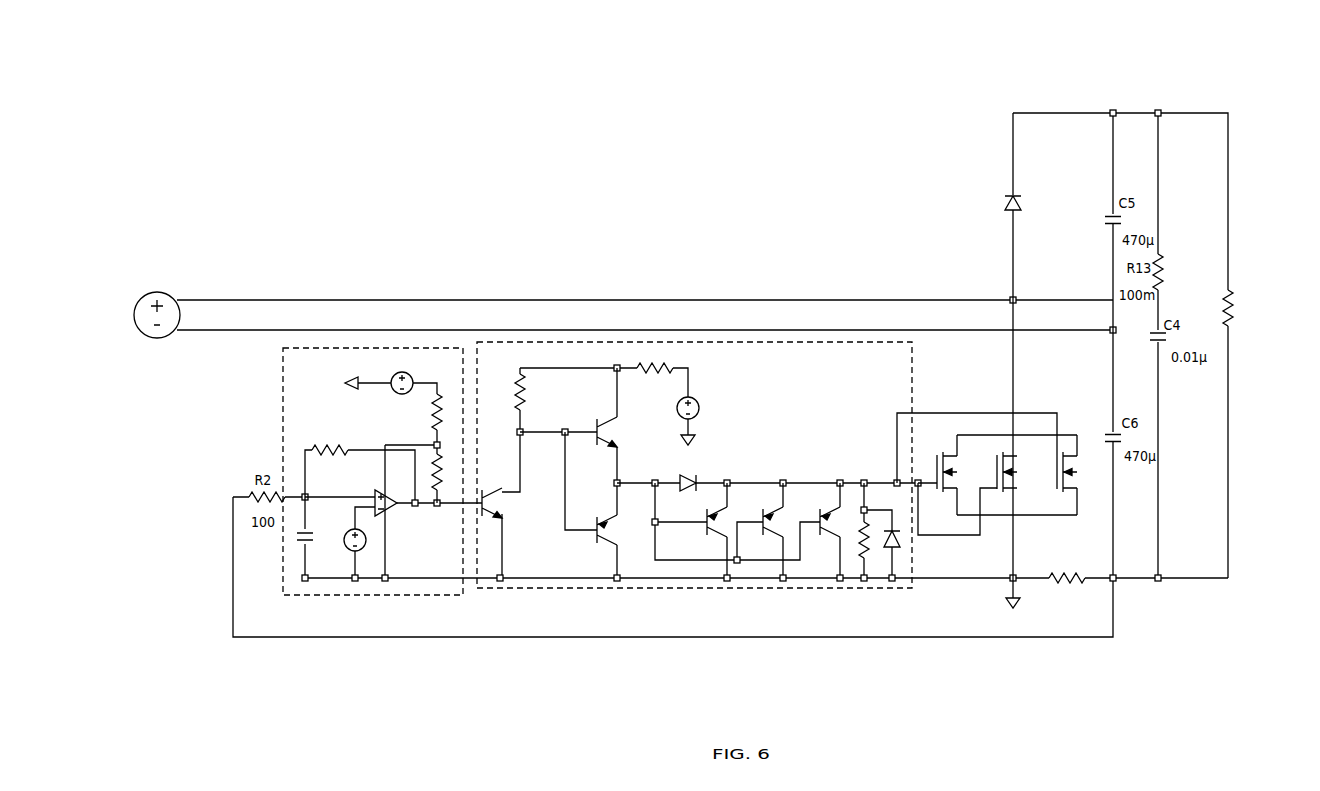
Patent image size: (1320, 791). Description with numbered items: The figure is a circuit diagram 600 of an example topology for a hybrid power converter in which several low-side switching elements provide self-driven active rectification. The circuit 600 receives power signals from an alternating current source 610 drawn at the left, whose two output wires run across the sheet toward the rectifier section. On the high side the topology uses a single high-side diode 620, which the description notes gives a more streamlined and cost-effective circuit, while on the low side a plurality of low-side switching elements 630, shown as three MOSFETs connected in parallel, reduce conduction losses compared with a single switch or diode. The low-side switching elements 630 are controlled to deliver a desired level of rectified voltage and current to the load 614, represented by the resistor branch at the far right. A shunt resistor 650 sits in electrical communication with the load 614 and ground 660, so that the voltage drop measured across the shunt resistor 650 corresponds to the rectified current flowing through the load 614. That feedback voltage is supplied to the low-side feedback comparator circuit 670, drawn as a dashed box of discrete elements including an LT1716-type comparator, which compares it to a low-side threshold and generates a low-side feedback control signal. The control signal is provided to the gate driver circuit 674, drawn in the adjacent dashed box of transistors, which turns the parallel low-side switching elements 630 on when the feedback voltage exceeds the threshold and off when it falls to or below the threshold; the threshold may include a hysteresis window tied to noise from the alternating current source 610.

The circuit diagram 600 is at (646, 185).
The alternating current source 610 is at (141, 281).
The load 614 is at (1253, 284).
The high-side diode 620 is at (1025, 206).
The low-side switching elements 630 is at (998, 417).
The shunt resistor 650 is at (1094, 608).
The ground 660 is at (1041, 623).
The low-side feedback comparator circuit 670 is at (382, 433).
The gate driver circuit 674 is at (699, 440).